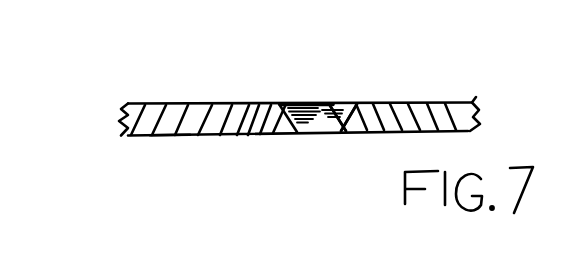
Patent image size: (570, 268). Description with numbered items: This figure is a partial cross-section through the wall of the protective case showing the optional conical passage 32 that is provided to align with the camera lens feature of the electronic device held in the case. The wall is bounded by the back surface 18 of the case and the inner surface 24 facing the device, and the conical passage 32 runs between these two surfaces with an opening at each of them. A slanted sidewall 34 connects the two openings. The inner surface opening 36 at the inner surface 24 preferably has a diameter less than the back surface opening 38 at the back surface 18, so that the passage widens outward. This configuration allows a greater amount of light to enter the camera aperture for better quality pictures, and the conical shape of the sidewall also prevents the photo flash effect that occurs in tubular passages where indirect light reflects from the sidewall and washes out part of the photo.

The back surface 18 is at (183, 103).
The inner surface 24 is at (171, 137).
The conical passage 32 is at (298, 90).
The slanted sidewall 34 is at (331, 104).
The inner surface opening 36 is at (307, 138).
The back surface opening 38 is at (355, 103).